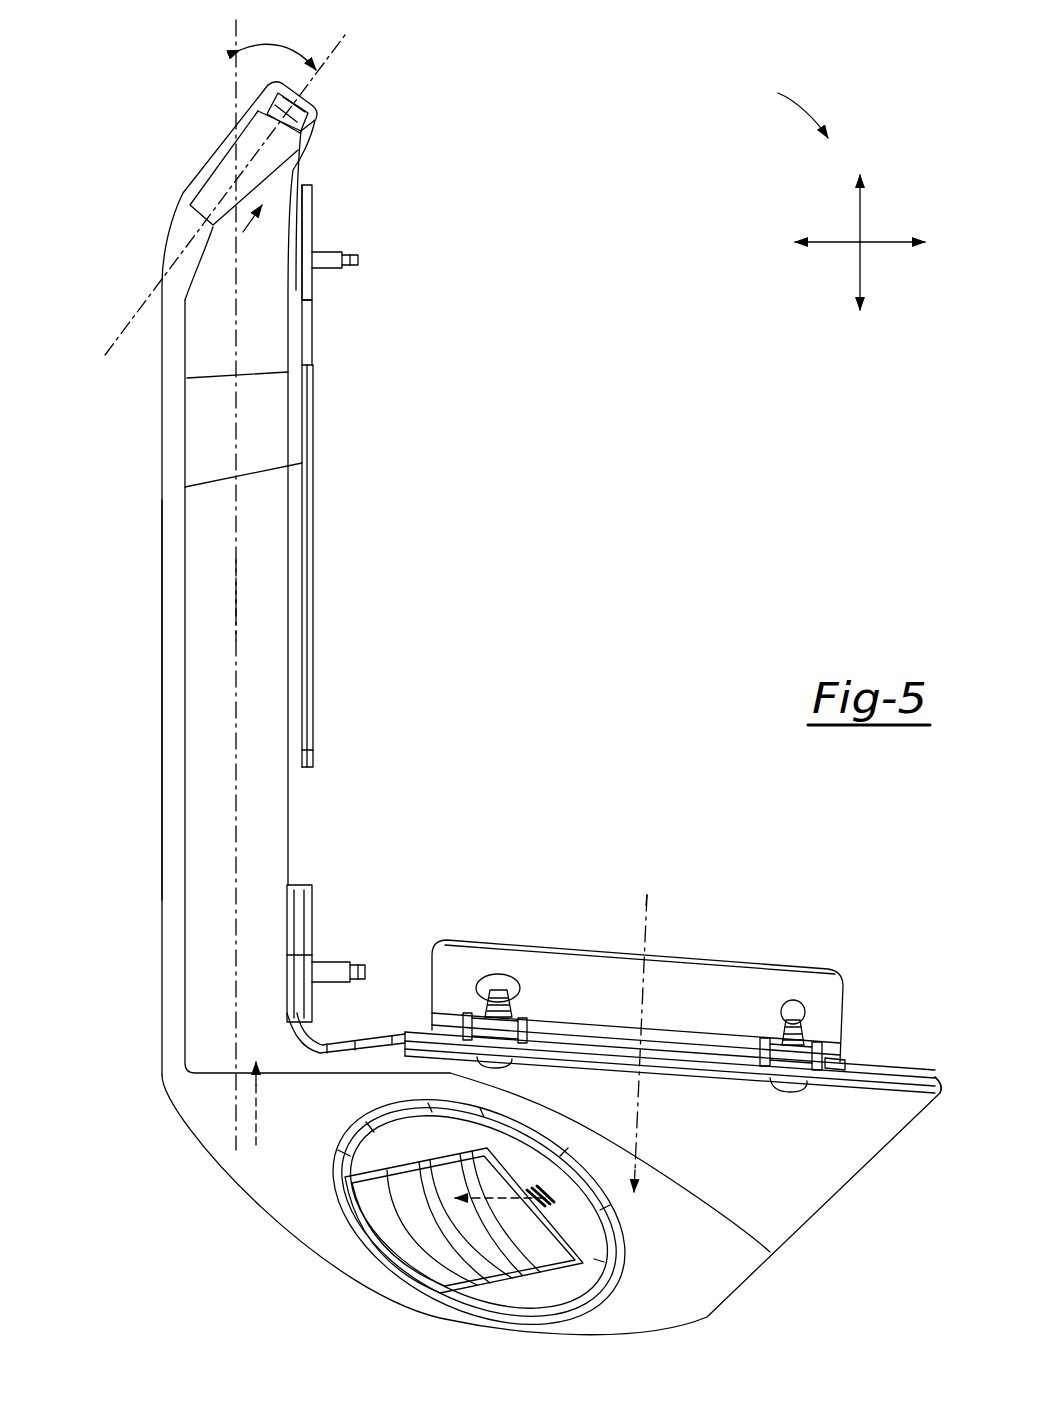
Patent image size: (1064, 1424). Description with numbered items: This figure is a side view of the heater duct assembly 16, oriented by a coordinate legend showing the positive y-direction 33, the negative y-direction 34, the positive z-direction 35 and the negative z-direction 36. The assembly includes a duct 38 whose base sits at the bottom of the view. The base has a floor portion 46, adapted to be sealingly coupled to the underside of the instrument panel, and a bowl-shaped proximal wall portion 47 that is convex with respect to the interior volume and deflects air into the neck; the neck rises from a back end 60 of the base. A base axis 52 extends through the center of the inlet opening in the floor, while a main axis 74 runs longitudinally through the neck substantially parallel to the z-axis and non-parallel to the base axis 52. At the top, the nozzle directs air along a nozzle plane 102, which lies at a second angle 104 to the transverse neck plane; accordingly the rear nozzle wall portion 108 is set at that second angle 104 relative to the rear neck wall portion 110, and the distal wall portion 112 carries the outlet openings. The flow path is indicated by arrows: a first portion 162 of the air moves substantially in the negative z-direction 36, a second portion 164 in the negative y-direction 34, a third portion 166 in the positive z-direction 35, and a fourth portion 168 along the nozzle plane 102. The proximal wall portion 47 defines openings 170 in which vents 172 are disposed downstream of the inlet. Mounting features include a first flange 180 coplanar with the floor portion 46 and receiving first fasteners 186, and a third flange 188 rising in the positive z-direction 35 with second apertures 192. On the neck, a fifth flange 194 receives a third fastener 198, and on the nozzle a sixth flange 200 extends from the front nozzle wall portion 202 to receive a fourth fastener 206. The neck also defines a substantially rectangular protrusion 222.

The heater duct assembly 16 is at (120, 100).
The duct 38 is at (173, 770).
The rear neck wall portion 110 is at (160, 798).
The rear nozzle wall portion 108 is at (210, 168).
The distal wall portion 112 is at (318, 125).
The second angle 104 is at (283, 42).
The nozzle plane 102 is at (303, 88).
The third portion of the air 166 is at (253, 1112).
The main axis 74 is at (237, 585).
The base axis 52 is at (650, 905).
The fourth portion of the air 168 is at (243, 232).
The sixth flange 200 is at (313, 285).
The front nozzle wall portion 202 is at (292, 330).
The protrusion 222 is at (305, 750).
The fourth fastener 206 is at (360, 262).
The fifth flange 194 is at (315, 912).
The third fastener 198 is at (365, 972).
The first flange 180 is at (705, 1077).
The third flange 188 is at (830, 995).
The second apertures 192 is at (498, 985).
The first fasteners 186 is at (498, 1064).
The openings 170 is at (320, 1210).
The vents 172 is at (545, 1290).
The second portion of the air 164 is at (500, 1200).
The first portion of the air 162 is at (636, 1140).
The floor portion 46 is at (872, 1062).
The back end 60 is at (932, 1085).
The proximal wall portion 47 is at (258, 1172).
The positive y-direction 33 is at (882, 243).
The negative y-direction 34 is at (833, 240).
The positive z-direction 35 is at (862, 222).
The negative z-direction 36 is at (858, 268).